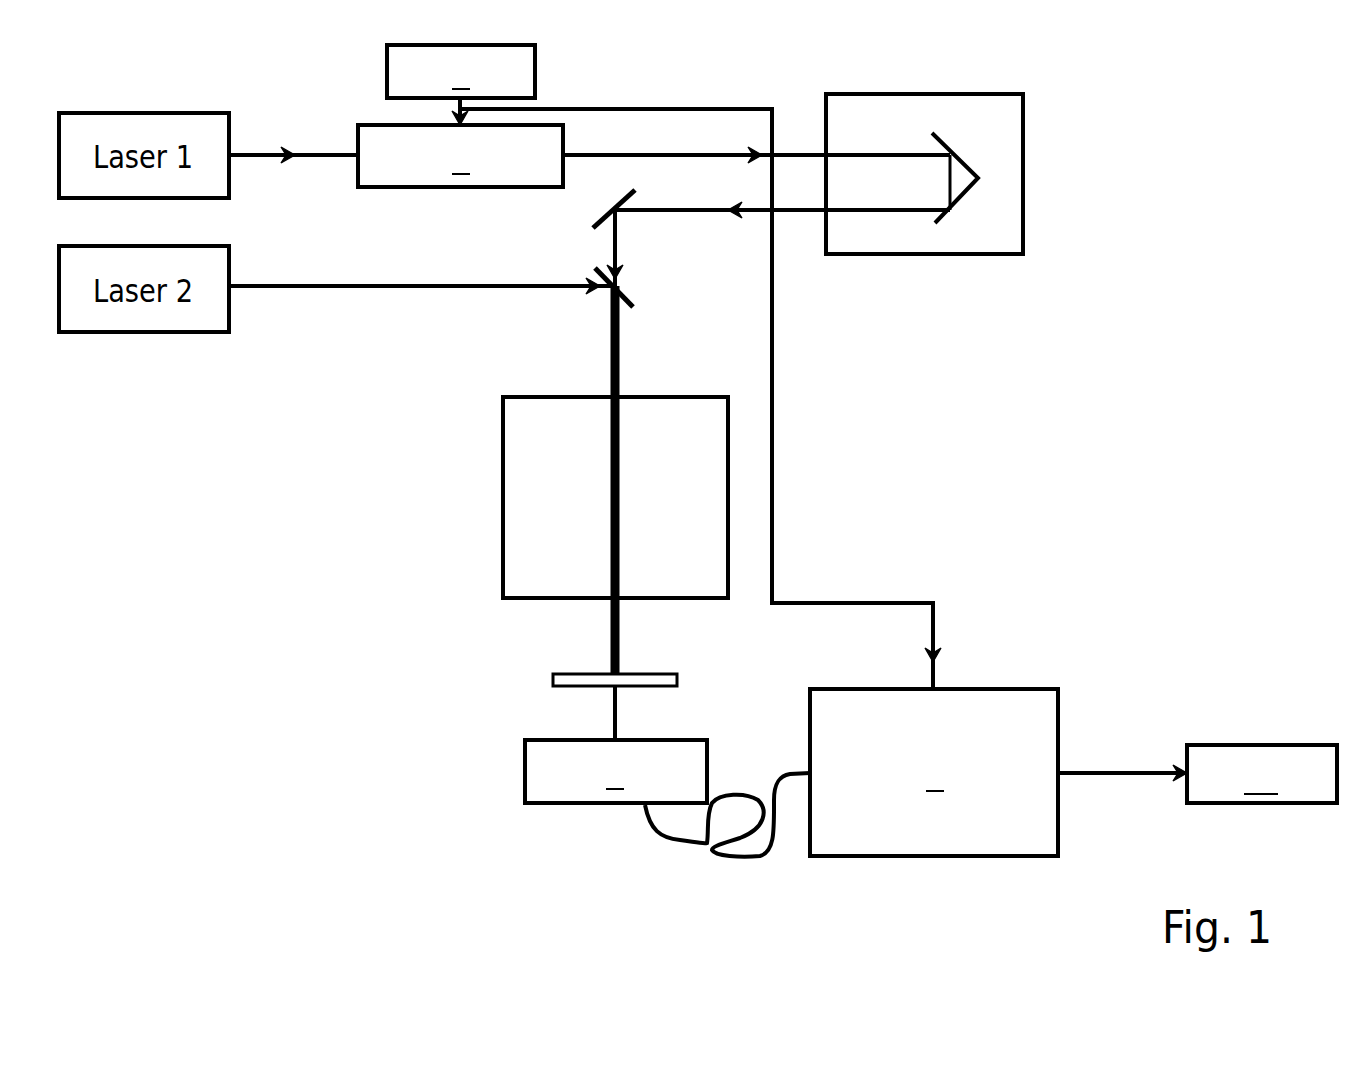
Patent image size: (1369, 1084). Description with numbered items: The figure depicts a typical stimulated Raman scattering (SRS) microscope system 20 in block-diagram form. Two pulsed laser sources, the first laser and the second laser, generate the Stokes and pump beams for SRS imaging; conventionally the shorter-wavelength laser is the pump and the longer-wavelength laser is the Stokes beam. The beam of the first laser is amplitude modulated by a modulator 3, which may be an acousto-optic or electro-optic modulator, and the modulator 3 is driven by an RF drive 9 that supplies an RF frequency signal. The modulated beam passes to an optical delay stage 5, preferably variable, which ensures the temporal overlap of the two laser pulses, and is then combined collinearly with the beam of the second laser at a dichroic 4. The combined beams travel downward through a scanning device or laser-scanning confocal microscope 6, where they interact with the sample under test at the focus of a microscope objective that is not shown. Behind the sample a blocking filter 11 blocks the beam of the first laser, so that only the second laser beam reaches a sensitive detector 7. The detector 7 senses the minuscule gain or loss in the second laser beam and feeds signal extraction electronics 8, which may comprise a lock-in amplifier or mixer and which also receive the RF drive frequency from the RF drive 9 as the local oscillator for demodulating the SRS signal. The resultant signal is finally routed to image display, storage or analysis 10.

The modulator 3 is at (460, 156).
The dichroic 4 is at (625, 294).
The optical delay stage 5 is at (1023, 155).
The laser-scanning microscope 6 is at (503, 500).
The detector 7 is at (616, 771).
The signal extraction electronics 8 is at (934, 772).
The RF drive 9 is at (461, 85).
The image display, storage or analysis 10 is at (1262, 774).
The blocking filter 11 is at (540, 679).
The SRS microscope system 20 is at (1188, 126).